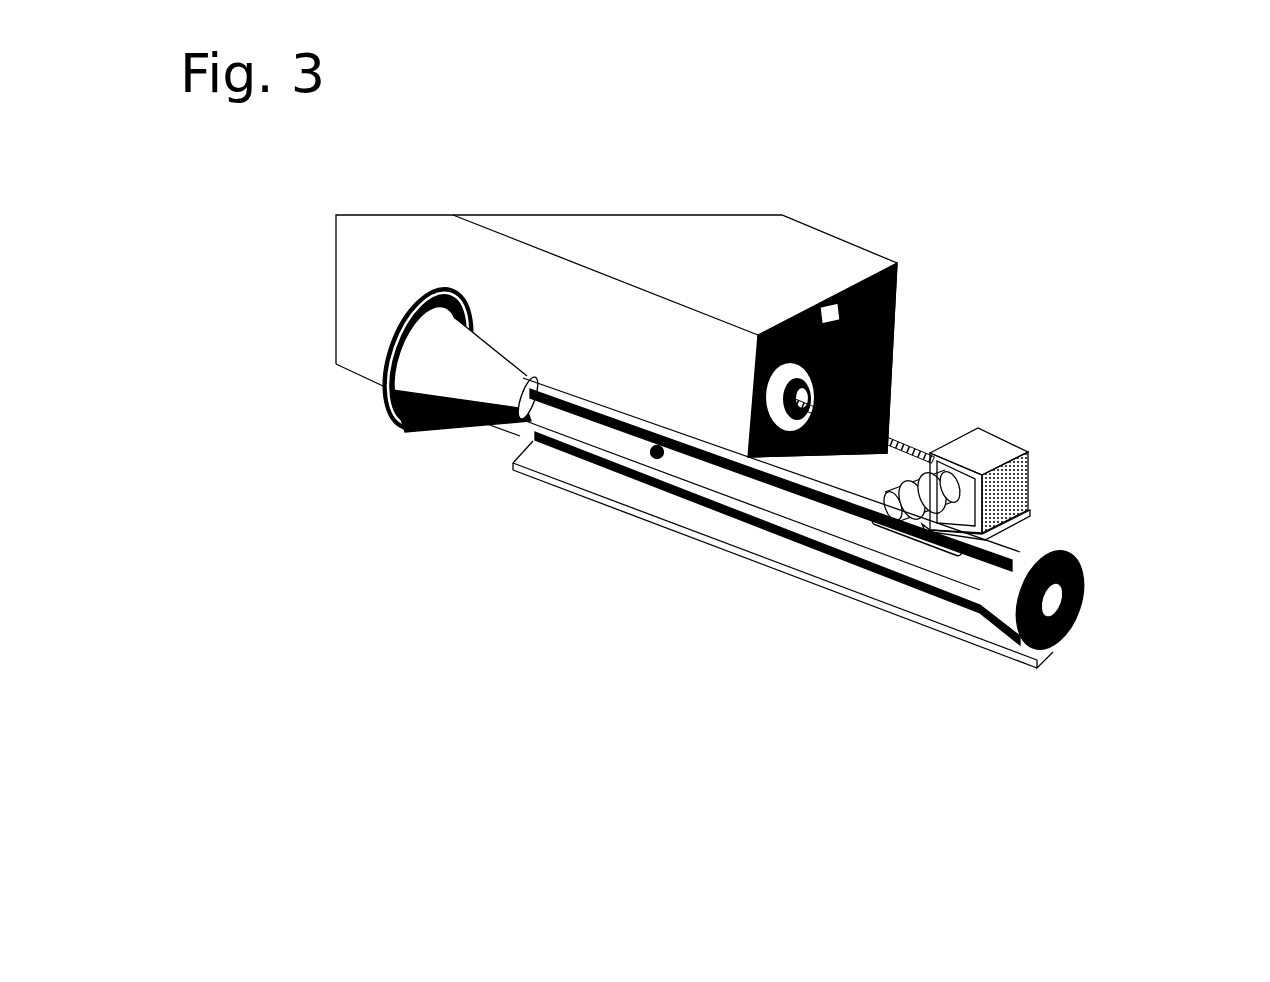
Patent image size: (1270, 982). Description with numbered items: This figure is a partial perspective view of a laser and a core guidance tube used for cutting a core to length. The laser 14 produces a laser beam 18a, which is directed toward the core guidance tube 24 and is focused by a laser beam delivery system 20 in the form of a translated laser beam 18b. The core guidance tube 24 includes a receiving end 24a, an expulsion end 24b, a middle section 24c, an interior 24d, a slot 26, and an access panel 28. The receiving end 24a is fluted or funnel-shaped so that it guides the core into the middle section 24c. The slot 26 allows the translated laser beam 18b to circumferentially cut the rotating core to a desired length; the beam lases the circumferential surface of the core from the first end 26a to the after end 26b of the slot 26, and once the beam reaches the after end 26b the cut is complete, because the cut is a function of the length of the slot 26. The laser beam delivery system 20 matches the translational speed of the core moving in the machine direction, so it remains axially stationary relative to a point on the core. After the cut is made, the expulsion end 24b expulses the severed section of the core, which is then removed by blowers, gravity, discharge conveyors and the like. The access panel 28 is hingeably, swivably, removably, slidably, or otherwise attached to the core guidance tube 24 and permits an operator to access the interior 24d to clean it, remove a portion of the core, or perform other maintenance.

The laser 14 is at (758, 271).
The laser beam 18a is at (888, 435).
The translated laser beam 18b is at (885, 508).
The laser beam delivery system 20 is at (981, 437).
The core guidance tube 24 is at (745, 531).
The receiving end 24a is at (417, 365).
The expulsion end 24b is at (1035, 655).
The middle section 24c is at (752, 500).
The interior 24d is at (650, 452).
The slot 26 is at (891, 513).
The first end 26a is at (768, 495).
The after end 26b is at (950, 548).
The access panel 28 is at (910, 622).